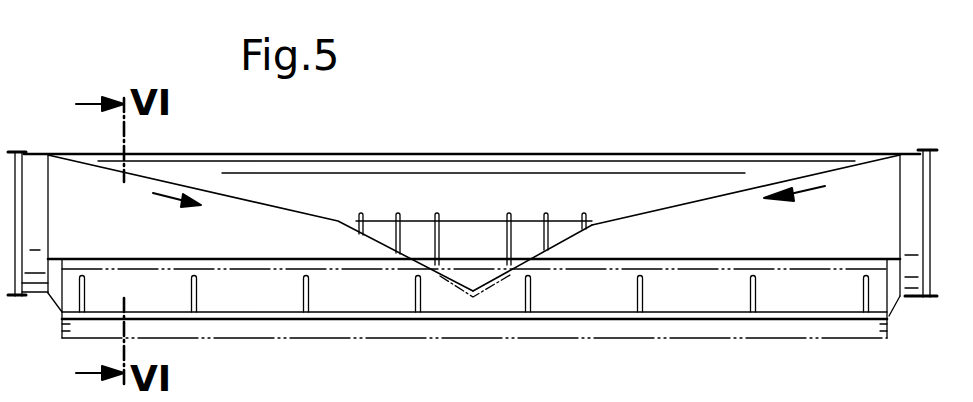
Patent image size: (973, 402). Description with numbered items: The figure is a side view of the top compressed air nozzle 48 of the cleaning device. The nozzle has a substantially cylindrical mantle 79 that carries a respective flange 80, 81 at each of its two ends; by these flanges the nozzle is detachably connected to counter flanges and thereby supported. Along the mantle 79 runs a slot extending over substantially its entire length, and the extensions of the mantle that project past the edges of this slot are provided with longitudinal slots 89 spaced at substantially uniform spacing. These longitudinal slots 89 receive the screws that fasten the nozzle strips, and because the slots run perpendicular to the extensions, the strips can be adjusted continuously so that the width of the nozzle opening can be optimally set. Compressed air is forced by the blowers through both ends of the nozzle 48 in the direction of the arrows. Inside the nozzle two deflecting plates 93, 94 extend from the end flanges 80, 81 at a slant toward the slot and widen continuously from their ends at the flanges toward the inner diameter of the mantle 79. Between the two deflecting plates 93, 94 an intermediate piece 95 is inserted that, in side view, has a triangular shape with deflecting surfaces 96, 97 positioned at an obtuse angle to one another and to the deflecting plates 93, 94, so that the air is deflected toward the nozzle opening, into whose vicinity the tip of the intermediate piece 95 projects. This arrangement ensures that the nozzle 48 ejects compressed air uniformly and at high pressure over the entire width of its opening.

The top compressed air nozzle 48 is at (594, 154).
The mantle 79 is at (712, 173).
The flange 80 is at (40, 254).
The flange 81 is at (926, 288).
The longitudinal slots 89 is at (309, 302).
The deflecting plate 93 is at (263, 202).
The deflecting plate 94 is at (810, 176).
The intermediate piece 95 is at (455, 240).
The deflecting surface 96 is at (378, 242).
The deflecting surface 97 is at (563, 241).